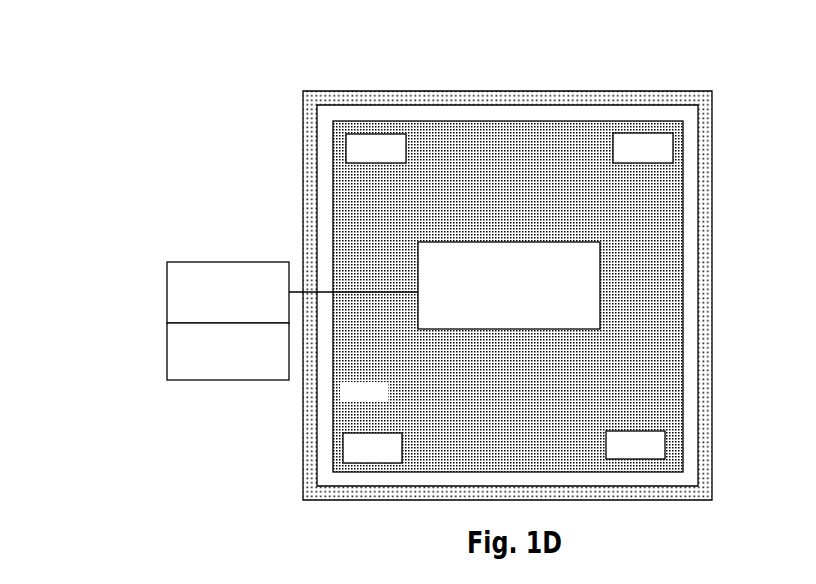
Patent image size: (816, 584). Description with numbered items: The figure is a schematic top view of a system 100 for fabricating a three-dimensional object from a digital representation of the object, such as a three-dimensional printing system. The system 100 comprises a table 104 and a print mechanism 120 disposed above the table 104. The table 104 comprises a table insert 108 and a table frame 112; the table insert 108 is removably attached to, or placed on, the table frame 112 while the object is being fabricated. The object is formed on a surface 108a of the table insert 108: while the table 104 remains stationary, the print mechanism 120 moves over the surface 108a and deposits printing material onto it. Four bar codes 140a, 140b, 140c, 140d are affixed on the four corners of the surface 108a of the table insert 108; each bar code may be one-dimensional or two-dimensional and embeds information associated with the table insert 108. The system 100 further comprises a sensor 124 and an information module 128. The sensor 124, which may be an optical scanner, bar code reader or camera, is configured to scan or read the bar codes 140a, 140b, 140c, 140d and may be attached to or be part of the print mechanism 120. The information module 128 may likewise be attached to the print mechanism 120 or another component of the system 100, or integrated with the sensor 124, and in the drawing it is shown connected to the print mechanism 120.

The system 100 is at (398, 260).
The table 104 is at (364, 296).
The table insert 108 is at (343, 399).
The surface 108a is at (386, 399).
The table frame 112 is at (303, 500).
The print mechanism 120 is at (509, 285).
The sensor 124 is at (228, 351).
The information module 128 is at (292, 292).
The bar code 140a is at (635, 445).
The bar code 140b is at (643, 148).
The bar code 140c is at (376, 148).
The bar code 140d is at (372, 448).